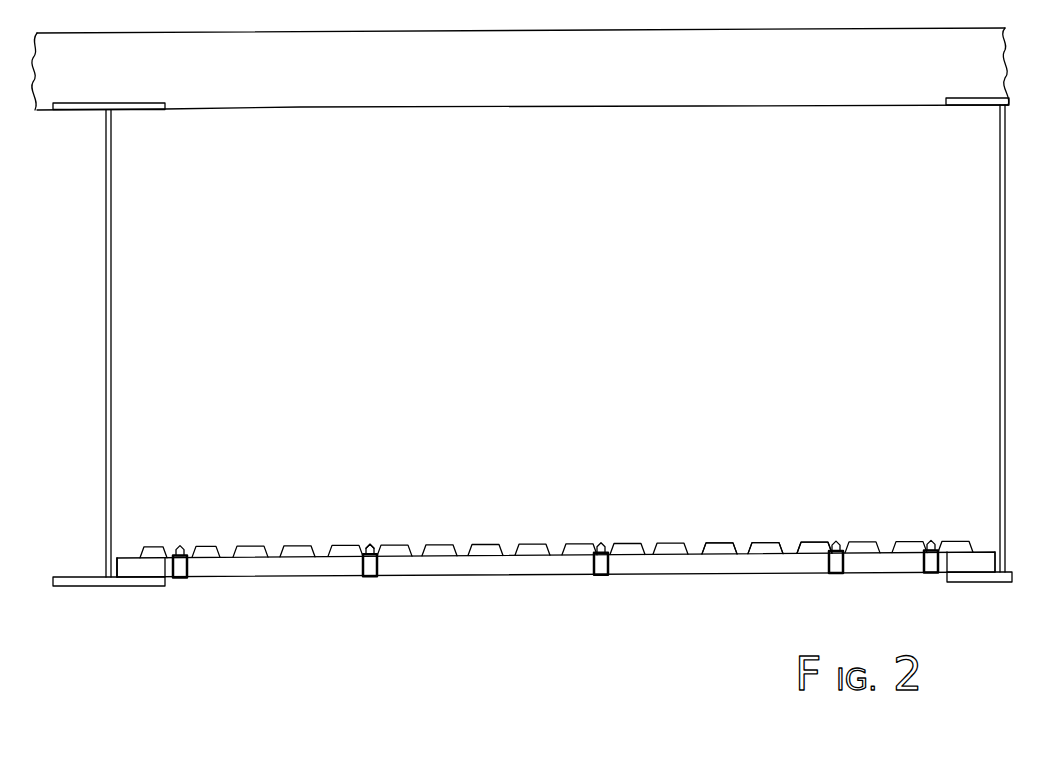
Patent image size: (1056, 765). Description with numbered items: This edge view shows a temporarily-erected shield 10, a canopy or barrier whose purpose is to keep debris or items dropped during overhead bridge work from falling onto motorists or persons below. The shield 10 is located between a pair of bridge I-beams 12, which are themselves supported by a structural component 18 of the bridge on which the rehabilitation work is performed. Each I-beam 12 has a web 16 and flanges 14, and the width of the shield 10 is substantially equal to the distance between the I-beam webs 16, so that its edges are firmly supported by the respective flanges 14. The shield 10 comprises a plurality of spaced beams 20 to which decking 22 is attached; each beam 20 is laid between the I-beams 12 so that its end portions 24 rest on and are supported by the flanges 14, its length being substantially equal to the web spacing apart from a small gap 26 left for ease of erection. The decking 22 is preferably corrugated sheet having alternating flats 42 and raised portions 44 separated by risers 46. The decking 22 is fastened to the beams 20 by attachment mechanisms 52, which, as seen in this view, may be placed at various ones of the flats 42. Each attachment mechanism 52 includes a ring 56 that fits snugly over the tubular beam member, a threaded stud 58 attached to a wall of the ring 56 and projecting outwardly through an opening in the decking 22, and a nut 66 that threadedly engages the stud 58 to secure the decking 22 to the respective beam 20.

The shield 10 is at (665, 478).
The bridge I-beams 12 is at (1004, 107).
The flanges 14 is at (138, 587).
The I-beam webs 16 is at (112, 352).
The structural component 18 is at (519, 86).
The beams 20 is at (438, 575).
The decking 22 is at (442, 543).
The end portions 24 is at (152, 565).
The gap 26 is at (115, 550).
The flats 42 is at (790, 550).
The raised portions 44 is at (720, 542).
The risers 46 is at (737, 545).
The attachment mechanism 52 is at (180, 583).
The ring 56 is at (365, 568).
The threaded stud 58 is at (368, 547).
The nut 66 is at (375, 552).